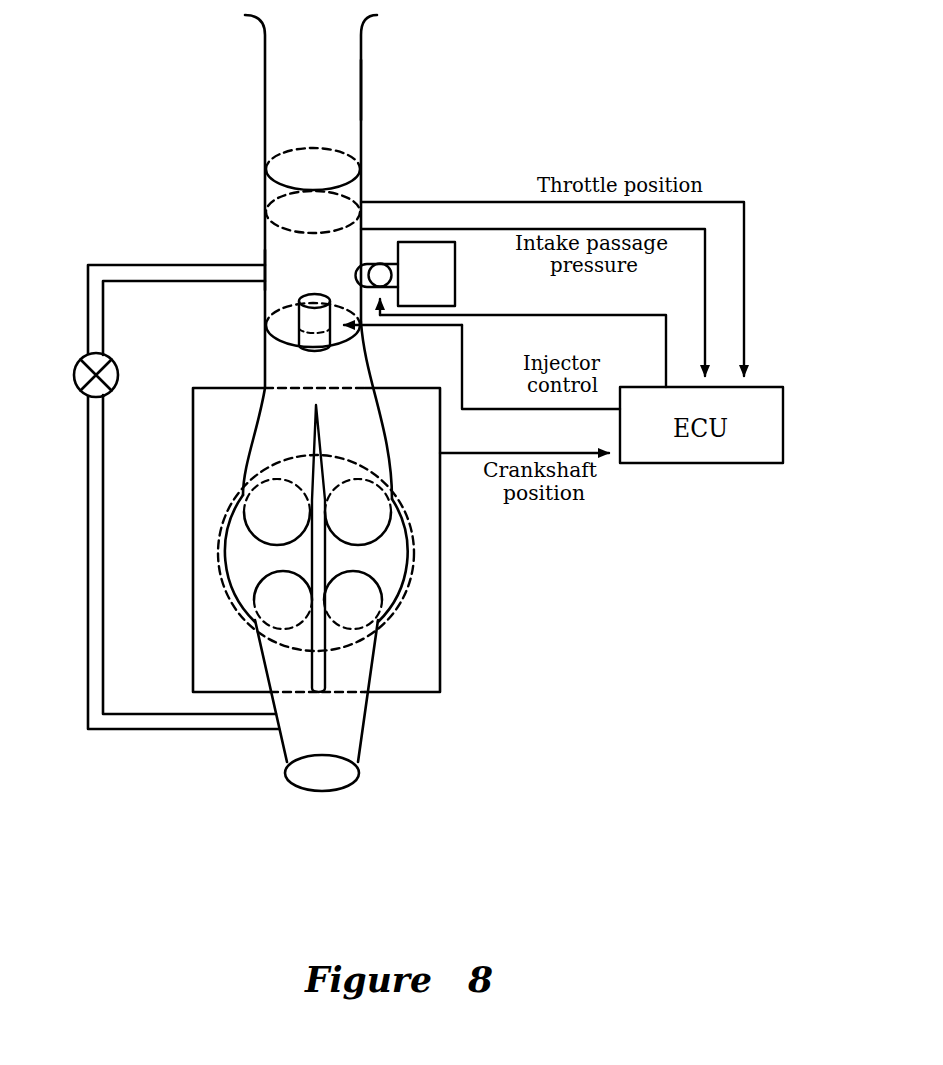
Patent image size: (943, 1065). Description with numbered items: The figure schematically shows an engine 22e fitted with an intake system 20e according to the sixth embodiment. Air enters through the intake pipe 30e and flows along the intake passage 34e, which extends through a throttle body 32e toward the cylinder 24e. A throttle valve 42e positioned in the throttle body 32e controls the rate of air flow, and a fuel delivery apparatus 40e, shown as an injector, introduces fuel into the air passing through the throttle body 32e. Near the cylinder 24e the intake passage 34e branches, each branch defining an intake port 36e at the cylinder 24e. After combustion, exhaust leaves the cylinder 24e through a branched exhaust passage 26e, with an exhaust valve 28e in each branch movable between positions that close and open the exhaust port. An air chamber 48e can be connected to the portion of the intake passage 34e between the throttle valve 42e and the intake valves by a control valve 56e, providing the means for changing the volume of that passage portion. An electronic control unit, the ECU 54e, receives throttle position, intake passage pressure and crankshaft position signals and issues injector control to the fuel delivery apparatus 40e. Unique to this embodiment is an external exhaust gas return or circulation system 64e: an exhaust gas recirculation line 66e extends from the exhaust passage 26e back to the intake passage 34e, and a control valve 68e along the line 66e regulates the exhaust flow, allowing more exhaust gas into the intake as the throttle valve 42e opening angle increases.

The intake pipe 30e is at (265, 70).
The intake system 20e is at (395, 81).
The throttle valve 42e is at (263, 235).
The throttle body 32e is at (263, 263).
The control valve 56e is at (381, 263).
The air chamber 48e is at (437, 242).
The electronic control unit (ECU) 54e is at (755, 463).
The fuel delivery apparatus 40e is at (298, 312).
The intake passage 34e is at (296, 374).
The cylinder 24e is at (440, 672).
The engine 22e is at (514, 735).
The intake port 36e is at (273, 524).
The exhaust valve 28e is at (272, 598).
The exhaust passage 26e is at (362, 738).
The external exhaust gas return or circulation system 64e is at (136, 737).
The exhaust gas recirculation line 66e is at (212, 730).
The control valve 68e is at (76, 383).